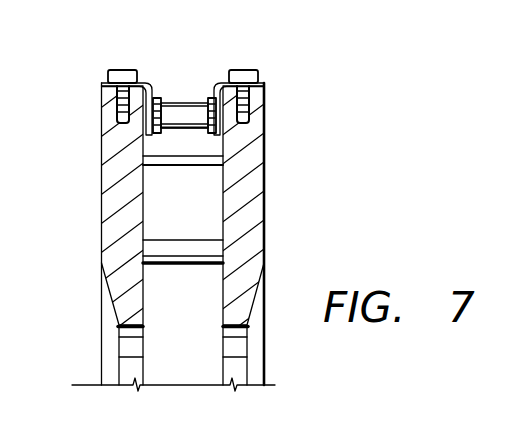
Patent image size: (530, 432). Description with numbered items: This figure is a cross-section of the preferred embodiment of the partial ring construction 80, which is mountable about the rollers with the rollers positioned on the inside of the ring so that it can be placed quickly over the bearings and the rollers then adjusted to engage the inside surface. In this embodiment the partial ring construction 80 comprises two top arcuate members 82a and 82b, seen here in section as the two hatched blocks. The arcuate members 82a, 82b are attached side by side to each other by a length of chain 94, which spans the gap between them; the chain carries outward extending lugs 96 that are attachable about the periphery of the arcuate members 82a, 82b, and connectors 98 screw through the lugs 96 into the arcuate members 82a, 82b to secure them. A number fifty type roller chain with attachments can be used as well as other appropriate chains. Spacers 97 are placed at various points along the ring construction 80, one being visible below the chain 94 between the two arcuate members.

The partial ring construction 80 is at (288, 229).
The top arcuate member 82a is at (101, 162).
The top arcuate member 82b is at (264, 165).
The chain 94 is at (181, 99).
The lug 96 is at (101, 83).
The spacer 97 is at (184, 264).
The connector 98 is at (122, 70).